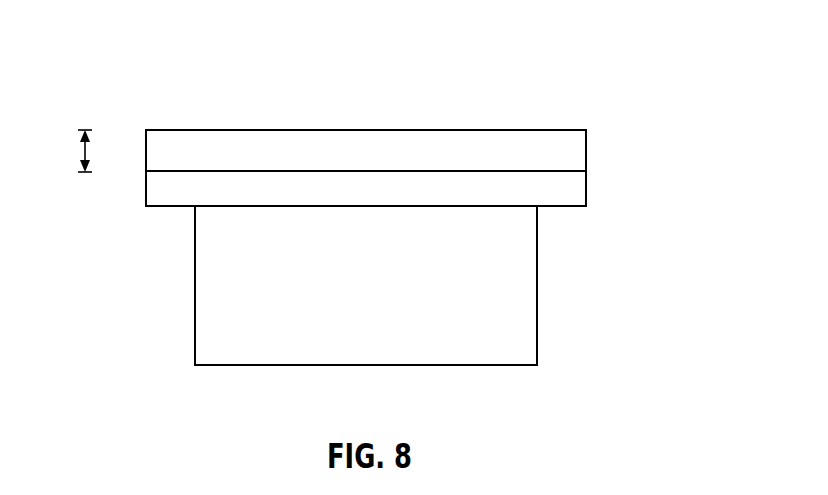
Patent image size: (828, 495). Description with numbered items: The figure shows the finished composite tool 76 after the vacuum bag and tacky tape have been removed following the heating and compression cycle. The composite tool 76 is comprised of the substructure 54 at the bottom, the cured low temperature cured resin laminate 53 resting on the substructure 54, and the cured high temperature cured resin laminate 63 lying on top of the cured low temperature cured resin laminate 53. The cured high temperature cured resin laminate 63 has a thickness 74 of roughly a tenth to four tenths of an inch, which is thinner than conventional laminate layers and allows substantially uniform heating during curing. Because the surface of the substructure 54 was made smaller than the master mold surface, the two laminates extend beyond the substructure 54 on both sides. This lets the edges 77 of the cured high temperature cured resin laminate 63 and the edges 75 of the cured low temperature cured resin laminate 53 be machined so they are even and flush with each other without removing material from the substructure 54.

The composite tool 76 is at (378, 217).
The edges of cured high temperature cured resin laminate 77 is at (146, 142).
The cured high temperature cured resin laminate 63 is at (586, 142).
The edges of cured low temperature cured resin laminate 75 is at (146, 193).
The cured low temperature cured resin laminate 53 is at (586, 193).
The substructure 54 is at (517, 365).
The thickness 74 is at (83, 150).